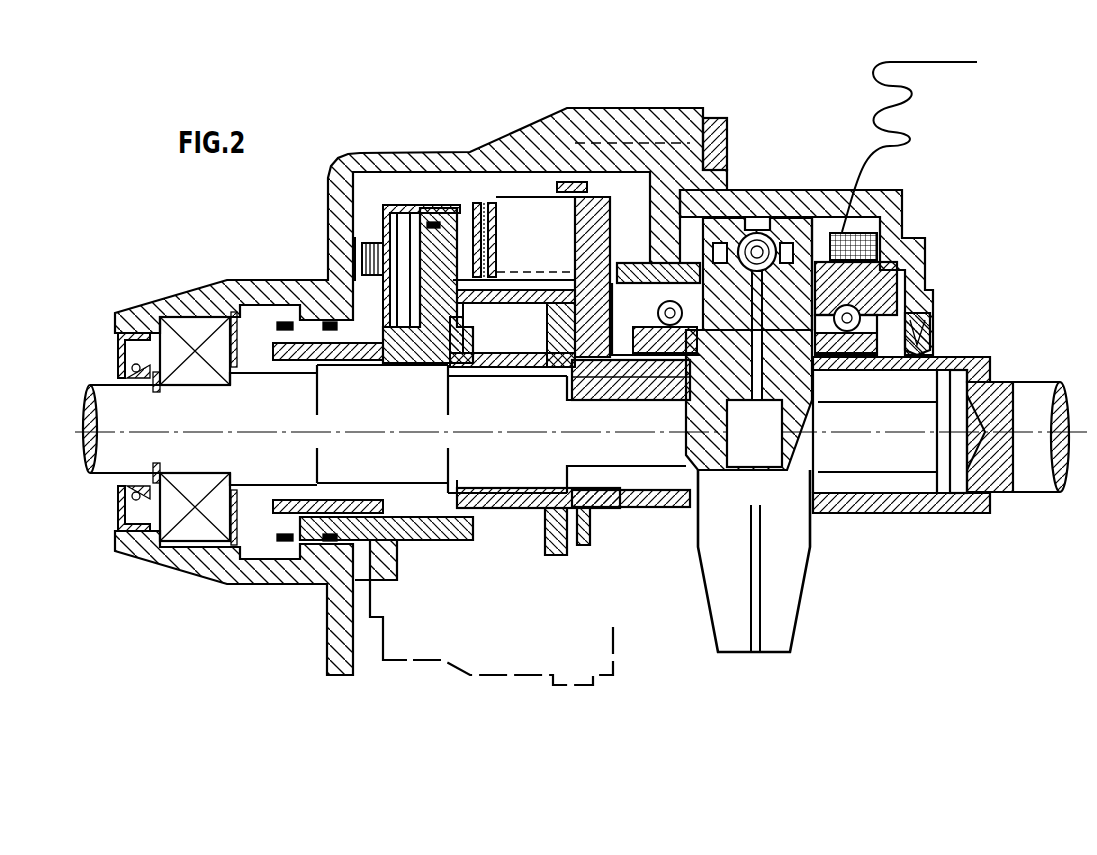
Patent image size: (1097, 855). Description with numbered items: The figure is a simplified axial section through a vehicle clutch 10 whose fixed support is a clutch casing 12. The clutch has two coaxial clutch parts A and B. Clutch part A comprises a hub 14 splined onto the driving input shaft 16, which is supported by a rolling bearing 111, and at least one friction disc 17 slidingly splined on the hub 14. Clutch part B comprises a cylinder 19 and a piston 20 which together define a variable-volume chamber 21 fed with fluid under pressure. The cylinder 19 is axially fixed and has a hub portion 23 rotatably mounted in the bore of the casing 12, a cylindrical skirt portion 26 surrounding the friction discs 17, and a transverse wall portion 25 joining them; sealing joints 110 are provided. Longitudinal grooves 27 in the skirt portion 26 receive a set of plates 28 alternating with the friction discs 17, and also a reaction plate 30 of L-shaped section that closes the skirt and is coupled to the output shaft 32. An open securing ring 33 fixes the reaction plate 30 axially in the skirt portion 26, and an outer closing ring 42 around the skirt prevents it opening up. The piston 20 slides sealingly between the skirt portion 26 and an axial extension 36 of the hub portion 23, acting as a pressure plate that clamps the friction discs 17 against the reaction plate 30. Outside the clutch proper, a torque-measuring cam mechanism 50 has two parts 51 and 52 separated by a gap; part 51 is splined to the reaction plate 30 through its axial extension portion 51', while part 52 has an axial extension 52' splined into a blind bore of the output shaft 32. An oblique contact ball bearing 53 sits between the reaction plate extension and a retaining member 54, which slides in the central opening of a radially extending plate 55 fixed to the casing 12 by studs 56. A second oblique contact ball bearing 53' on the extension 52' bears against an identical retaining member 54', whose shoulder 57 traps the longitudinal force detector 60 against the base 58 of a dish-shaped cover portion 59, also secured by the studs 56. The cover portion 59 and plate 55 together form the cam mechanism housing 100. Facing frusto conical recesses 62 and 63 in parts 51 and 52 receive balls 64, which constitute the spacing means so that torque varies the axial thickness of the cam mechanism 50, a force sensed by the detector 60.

The clutch 10 is at (421, 380).
The clutch casing 12 is at (373, 142).
The hub 14 is at (527, 345).
The input shaft 16 is at (110, 450).
The friction disc 17 is at (482, 200).
The cylinder 19 is at (376, 192).
The piston 20 is at (457, 355).
The chamber 21 is at (405, 300).
The hub portion 23 is at (420, 345).
The transverse wall portion 25 is at (329, 193).
The skirt portion 26 is at (427, 205).
The longitudinal grooves 27 is at (508, 200).
The plates 28 is at (451, 205).
The reaction plate 30 is at (622, 226).
The output shaft 32 is at (1033, 468).
The open securing ring 33 is at (605, 150).
The axial extension 36 is at (512, 345).
The outer closing ring 42 is at (560, 182).
The cam mechanism 50 is at (780, 545).
The cam mechanism part 51 is at (701, 503).
The axial extension portion 51' is at (567, 557).
The cam mechanism part 52 is at (722, 519).
The axial extension 52' is at (913, 467).
The oblique contact ball bearing 53 is at (631, 429).
The oblique contact ball bearing 53' is at (952, 336).
The retaining member 54 is at (760, 197).
The retaining member 54' is at (907, 291).
The radially extending plate 55 is at (642, 158).
The studs 56 is at (715, 117).
The shoulder 57 is at (848, 228).
The base 58 is at (933, 290).
The cover portion 59 is at (892, 193).
The longitudinal force detector 60 is at (880, 240).
The frusto conical recesses 62 is at (690, 248).
The frusto conical recesses 63 is at (810, 220).
The balls 64 is at (767, 227).
The cam mechanism housing 100 is at (871, 210).
The joints 110 is at (118, 340).
The rolling bearing 111 is at (200, 543).
The clutch part A is at (508, 510).
The clutch part B is at (624, 196).